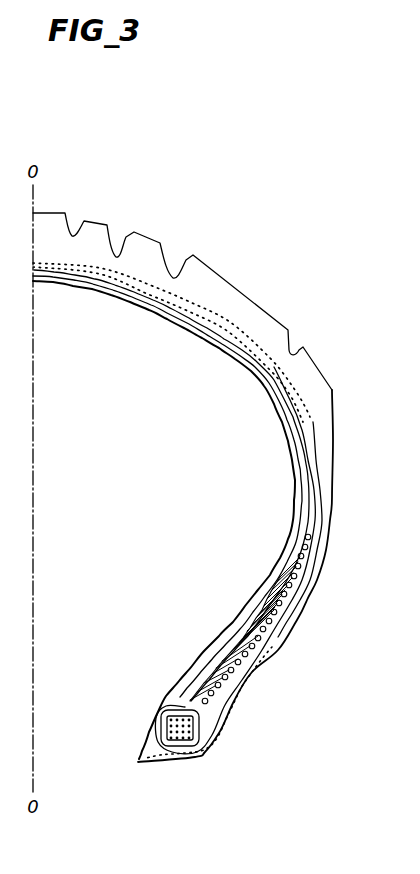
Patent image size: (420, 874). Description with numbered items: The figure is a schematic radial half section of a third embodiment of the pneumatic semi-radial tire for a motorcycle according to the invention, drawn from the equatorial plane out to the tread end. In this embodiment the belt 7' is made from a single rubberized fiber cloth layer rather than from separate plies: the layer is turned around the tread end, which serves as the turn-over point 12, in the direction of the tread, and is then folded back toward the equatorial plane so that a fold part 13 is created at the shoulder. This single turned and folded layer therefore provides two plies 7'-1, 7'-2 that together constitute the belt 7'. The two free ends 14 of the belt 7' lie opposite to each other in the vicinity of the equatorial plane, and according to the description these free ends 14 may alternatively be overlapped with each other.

The free ends 14 is at (43, 262).
The fold part 13 is at (210, 312).
The belt 7' is at (171, 453).
The ply 7'-1 is at (167, 486).
The ply 7'-2 is at (171, 453).
The turn-over point 12 is at (327, 429).